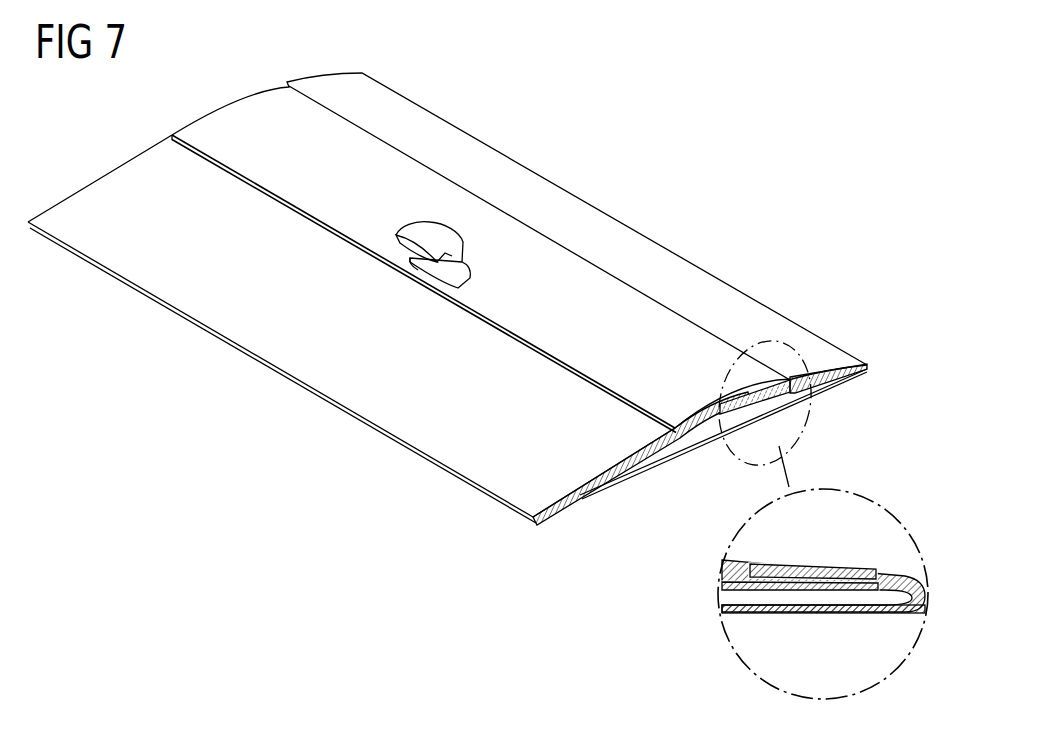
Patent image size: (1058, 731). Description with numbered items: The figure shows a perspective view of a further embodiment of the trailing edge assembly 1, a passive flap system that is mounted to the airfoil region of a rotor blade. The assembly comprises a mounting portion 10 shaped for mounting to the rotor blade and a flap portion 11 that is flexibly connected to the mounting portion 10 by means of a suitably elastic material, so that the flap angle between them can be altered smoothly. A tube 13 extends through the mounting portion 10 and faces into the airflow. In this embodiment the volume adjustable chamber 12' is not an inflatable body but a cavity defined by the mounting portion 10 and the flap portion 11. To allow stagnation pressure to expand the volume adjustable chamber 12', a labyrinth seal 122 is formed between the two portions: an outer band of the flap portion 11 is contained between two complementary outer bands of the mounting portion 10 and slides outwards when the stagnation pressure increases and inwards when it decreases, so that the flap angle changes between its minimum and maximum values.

The trailing edge assembly 1 is at (692, 163).
The mounting portion 10 is at (592, 458).
The flap portion 11 is at (834, 357).
The volume adjustable chamber 12' is at (752, 520).
The tube 13 is at (418, 230).
The labyrinth seal 122 is at (840, 513).